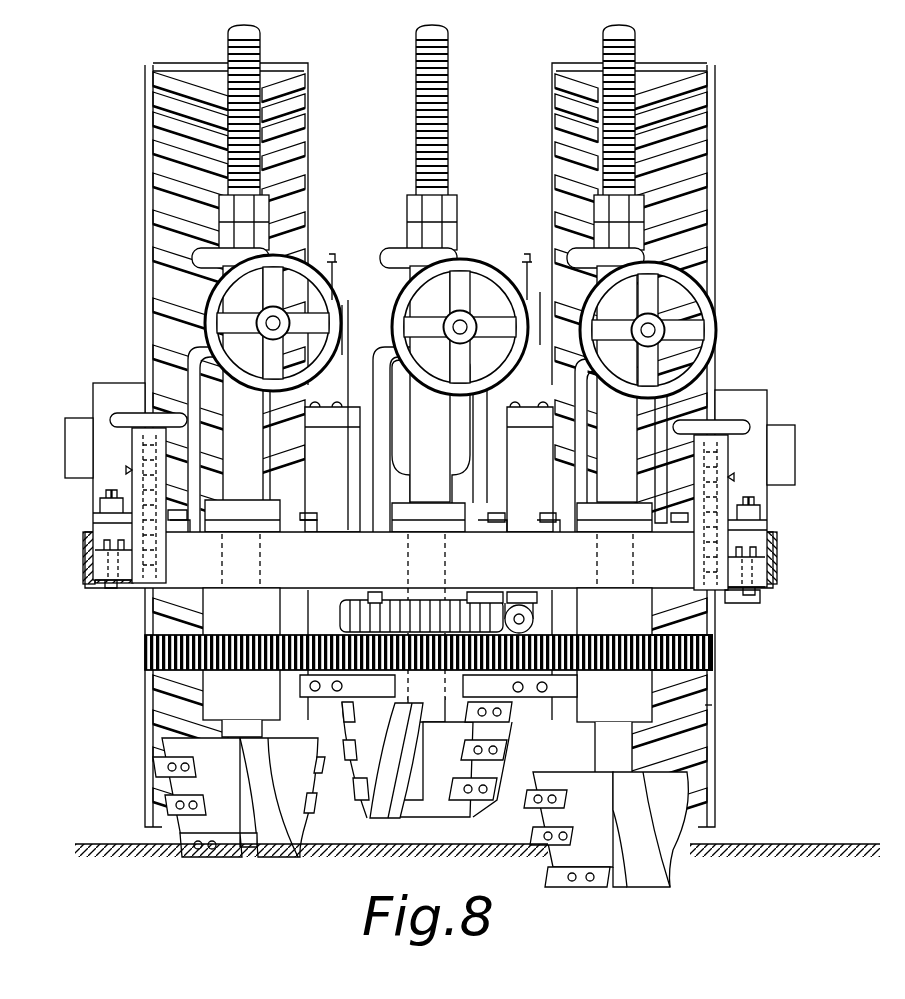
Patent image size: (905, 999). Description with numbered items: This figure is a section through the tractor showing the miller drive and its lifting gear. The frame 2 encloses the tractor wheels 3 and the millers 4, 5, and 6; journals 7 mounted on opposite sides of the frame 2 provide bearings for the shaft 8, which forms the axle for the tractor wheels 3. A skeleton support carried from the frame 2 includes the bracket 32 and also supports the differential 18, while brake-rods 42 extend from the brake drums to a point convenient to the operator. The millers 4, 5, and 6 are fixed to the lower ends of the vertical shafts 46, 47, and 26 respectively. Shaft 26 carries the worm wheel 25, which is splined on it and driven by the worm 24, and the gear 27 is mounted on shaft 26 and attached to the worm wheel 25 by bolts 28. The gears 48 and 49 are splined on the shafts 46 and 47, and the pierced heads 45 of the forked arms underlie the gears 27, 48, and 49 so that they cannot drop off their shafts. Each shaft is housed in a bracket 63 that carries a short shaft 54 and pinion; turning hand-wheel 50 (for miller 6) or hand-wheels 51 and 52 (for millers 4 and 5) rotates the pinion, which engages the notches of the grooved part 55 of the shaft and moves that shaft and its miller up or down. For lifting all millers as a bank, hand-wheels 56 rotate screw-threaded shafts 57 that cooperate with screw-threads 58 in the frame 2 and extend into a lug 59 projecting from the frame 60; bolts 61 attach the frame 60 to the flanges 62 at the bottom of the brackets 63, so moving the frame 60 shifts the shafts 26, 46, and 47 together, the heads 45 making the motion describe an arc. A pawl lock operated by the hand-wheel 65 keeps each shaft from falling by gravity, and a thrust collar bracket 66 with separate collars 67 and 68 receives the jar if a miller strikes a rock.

The frame 2 is at (777, 570).
The tractor wheels 3 is at (716, 106).
The miller 4 is at (239, 797).
The miller 5 is at (606, 829).
The miller 6 is at (407, 760).
The journals 7 is at (752, 390).
The shaft 8 is at (782, 425).
The differential 18 is at (388, 275).
The worm 24 is at (540, 619).
The worm wheel 25 is at (350, 608).
The shaft 26 is at (405, 690).
The gear 27 is at (512, 722).
The bolts 28 is at (375, 598).
The bracket 32 is at (540, 292).
The brake-rods 42 is at (528, 260).
The heads 45 is at (410, 690).
The shaft 46 is at (222, 605).
The shaft 47 is at (650, 735).
The gear 48 is at (145, 655).
The gear 49 is at (712, 655).
The hand-wheel 50 is at (483, 270).
The hand-wheel 51 is at (305, 262).
The hand-wheel 52 is at (683, 300).
The short shaft 54 is at (666, 330).
The grooved part 55 is at (603, 38).
The hand-wheels 56 is at (745, 420).
The screw-threaded shafts 57 is at (715, 445).
The screw-threads 58 is at (732, 477).
The lug 59 is at (745, 603).
The frame 60 is at (429, 626).
The bolts 61 is at (672, 525).
The flanges 62 is at (680, 540).
The brackets 63 is at (712, 370).
The hand-wheel 65 is at (642, 258).
The thrust collar bracket 66 is at (625, 210).
The collar 67 is at (700, 275).
The collar 68 is at (642, 232).